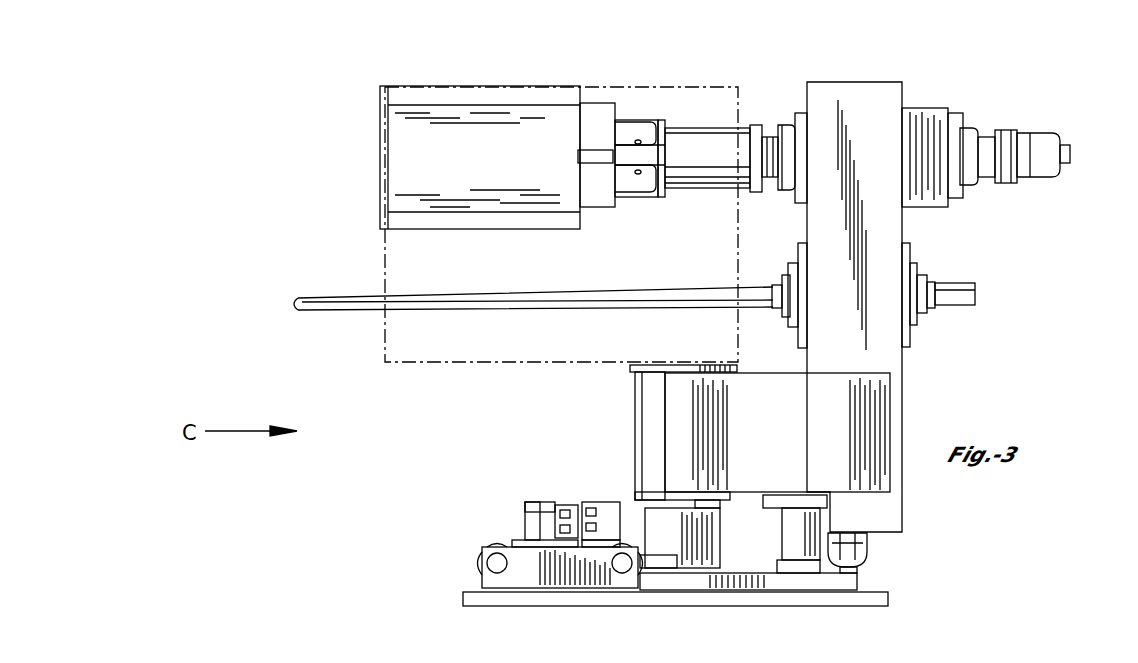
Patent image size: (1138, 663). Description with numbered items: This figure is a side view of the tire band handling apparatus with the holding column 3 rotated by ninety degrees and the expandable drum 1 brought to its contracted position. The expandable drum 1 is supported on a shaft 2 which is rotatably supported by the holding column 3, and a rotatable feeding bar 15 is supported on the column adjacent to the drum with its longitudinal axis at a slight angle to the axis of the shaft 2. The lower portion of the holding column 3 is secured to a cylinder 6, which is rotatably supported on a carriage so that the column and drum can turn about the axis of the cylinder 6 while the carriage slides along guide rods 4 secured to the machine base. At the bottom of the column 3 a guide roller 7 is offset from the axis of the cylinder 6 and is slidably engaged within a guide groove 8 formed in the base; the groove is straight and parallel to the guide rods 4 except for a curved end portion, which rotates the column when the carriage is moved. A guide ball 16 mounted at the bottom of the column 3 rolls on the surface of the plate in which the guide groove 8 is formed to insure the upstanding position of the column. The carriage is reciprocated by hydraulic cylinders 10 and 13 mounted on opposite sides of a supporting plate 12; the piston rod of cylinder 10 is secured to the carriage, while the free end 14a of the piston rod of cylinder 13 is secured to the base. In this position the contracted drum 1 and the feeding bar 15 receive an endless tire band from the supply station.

The expandable drum 1 is at (480, 88).
The shaft 2 is at (765, 143).
The holding column 3 is at (845, 93).
The guide rods 4 is at (495, 560).
The cylinder 6 is at (640, 393).
The guide roller 7 is at (803, 570).
The guide groove 8 is at (708, 580).
The hydraulic cylinder 10 is at (603, 502).
The supporting plate 12 is at (578, 505).
The hydraulic cylinder 13 is at (545, 520).
The free end of piston rod 14a is at (533, 518).
The rotatable feeding bar 15 is at (348, 305).
The guide ball 16 is at (858, 577).